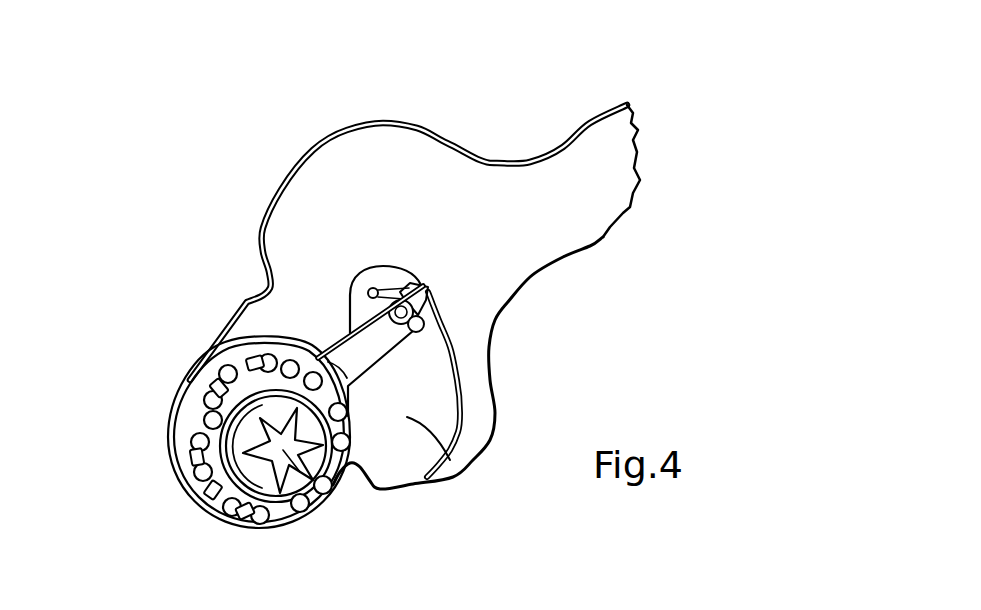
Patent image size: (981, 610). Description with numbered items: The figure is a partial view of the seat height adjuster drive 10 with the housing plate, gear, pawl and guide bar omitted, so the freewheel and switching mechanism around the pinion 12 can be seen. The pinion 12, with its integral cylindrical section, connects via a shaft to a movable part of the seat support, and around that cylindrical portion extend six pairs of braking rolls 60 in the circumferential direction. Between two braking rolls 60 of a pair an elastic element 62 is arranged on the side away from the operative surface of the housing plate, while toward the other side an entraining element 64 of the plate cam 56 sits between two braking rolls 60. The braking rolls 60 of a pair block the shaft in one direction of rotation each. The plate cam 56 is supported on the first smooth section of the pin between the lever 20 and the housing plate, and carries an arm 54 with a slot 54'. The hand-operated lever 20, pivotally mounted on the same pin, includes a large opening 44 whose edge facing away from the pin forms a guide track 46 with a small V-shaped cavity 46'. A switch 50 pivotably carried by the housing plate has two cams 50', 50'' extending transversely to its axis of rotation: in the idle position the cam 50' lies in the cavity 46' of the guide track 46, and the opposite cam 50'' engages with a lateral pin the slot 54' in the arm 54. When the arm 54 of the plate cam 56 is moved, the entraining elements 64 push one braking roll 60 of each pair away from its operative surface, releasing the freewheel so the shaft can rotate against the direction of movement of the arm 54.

The seat height adjuster drive 10 is at (237, 121).
The pinion 12 is at (332, 490).
The lever 20 is at (480, 215).
The opening 44 is at (450, 460).
The guide track 46 is at (513, 384).
The V-shaped cavity 46' is at (531, 304).
The switch 50 is at (278, 246).
The cam 50' is at (320, 247).
The cam 50'' is at (285, 300).
The arm 54 is at (267, 341).
The slot 54' is at (198, 301).
The plate cam 56 is at (192, 378).
The braking rolls 60 is at (182, 390).
The elastic element 62 is at (194, 416).
The entraining element 64 is at (182, 462).